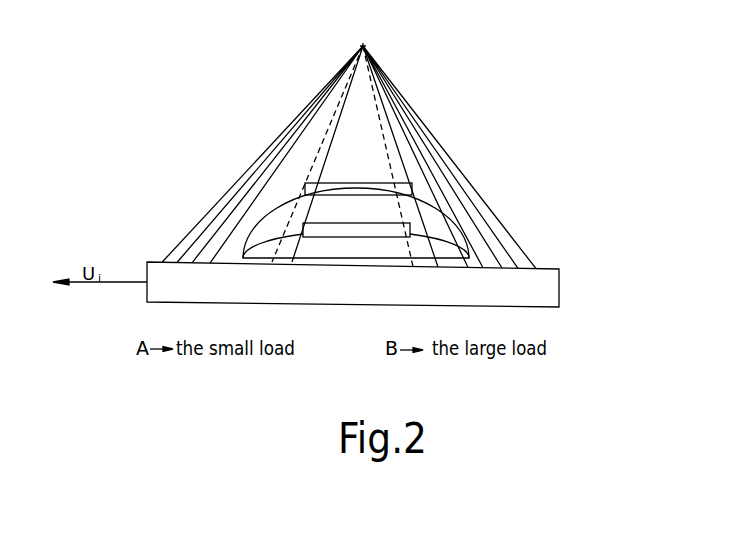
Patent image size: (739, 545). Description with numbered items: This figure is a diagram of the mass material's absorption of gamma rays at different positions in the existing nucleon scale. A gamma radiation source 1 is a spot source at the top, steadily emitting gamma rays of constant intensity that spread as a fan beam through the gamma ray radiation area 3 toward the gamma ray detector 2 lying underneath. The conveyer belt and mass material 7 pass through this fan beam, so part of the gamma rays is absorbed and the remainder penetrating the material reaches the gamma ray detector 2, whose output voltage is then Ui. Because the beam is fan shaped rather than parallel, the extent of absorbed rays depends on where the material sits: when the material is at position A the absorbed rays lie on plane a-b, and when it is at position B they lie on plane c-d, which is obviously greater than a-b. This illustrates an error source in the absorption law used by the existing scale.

The gamma radiation source 1 is at (363, 46).
The gamma ray detector 2 is at (545, 295).
The gamma ray radiation area 3 is at (437, 143).
The conveyer belt and mass material 7 is at (452, 243).